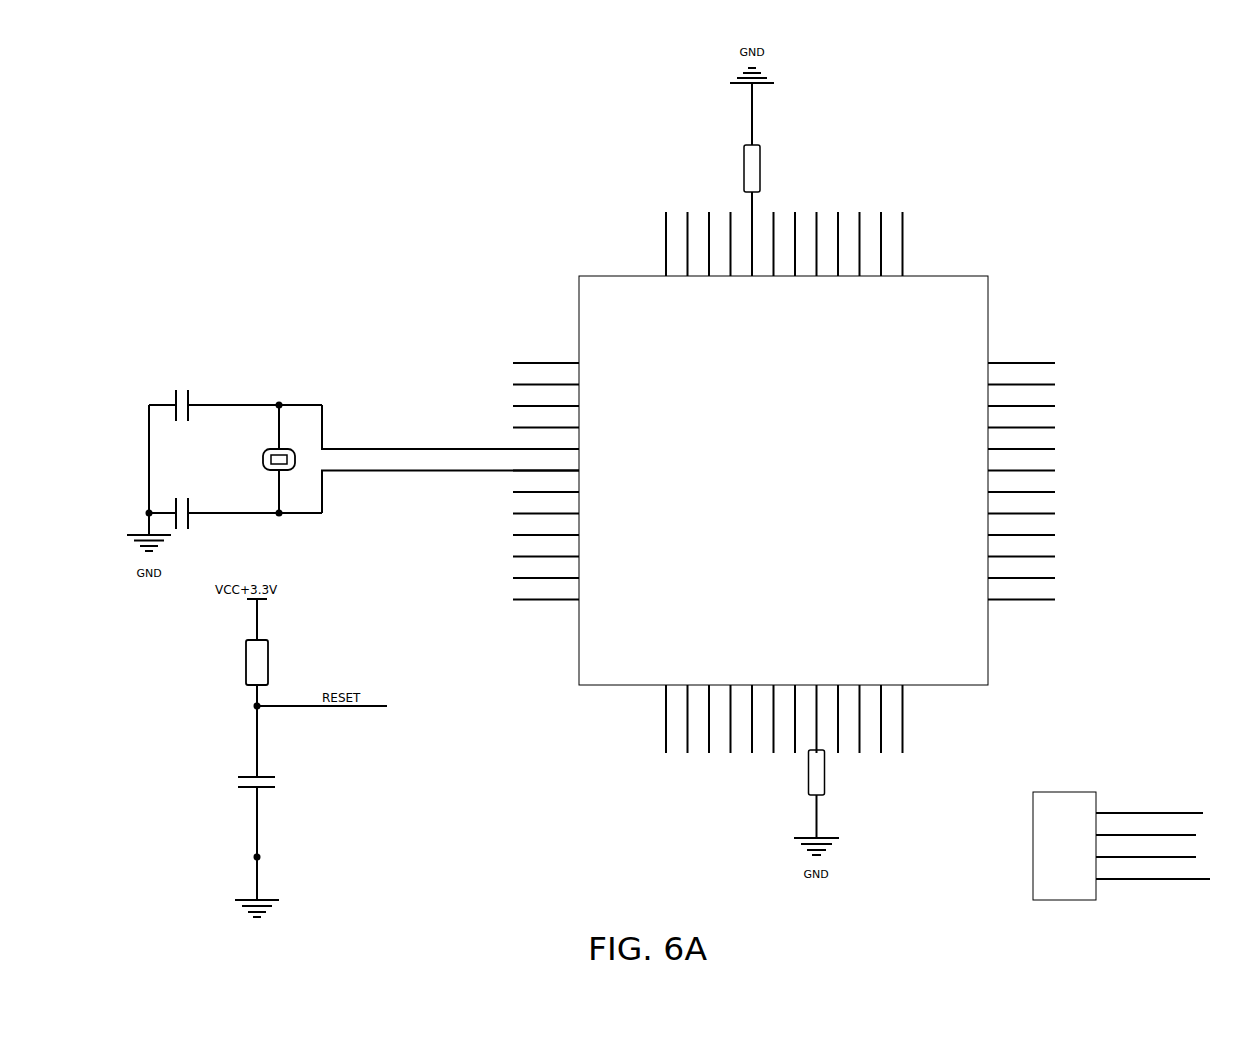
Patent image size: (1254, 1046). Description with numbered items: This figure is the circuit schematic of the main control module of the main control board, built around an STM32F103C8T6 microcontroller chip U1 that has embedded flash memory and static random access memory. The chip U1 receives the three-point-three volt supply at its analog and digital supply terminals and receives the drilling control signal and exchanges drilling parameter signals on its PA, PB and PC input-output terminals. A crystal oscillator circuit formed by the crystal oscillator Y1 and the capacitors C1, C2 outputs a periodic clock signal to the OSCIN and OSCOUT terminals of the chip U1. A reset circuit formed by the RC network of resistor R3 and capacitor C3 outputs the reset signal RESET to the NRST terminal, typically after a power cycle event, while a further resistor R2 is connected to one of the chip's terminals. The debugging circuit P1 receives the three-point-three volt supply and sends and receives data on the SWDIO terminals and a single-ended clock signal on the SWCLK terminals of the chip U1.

The microcontroller STM32F103C8T6 U1 is at (784, 482).
The capacitor C1 is at (179, 397).
The capacitor C2 is at (179, 505).
The capacitor C3 is at (265, 784).
The resistor R2 is at (818, 802).
The resistor R3 is at (265, 662).
The crystal oscillator Y1 is at (287, 459).
The debugging circuit P1 is at (1121, 849).